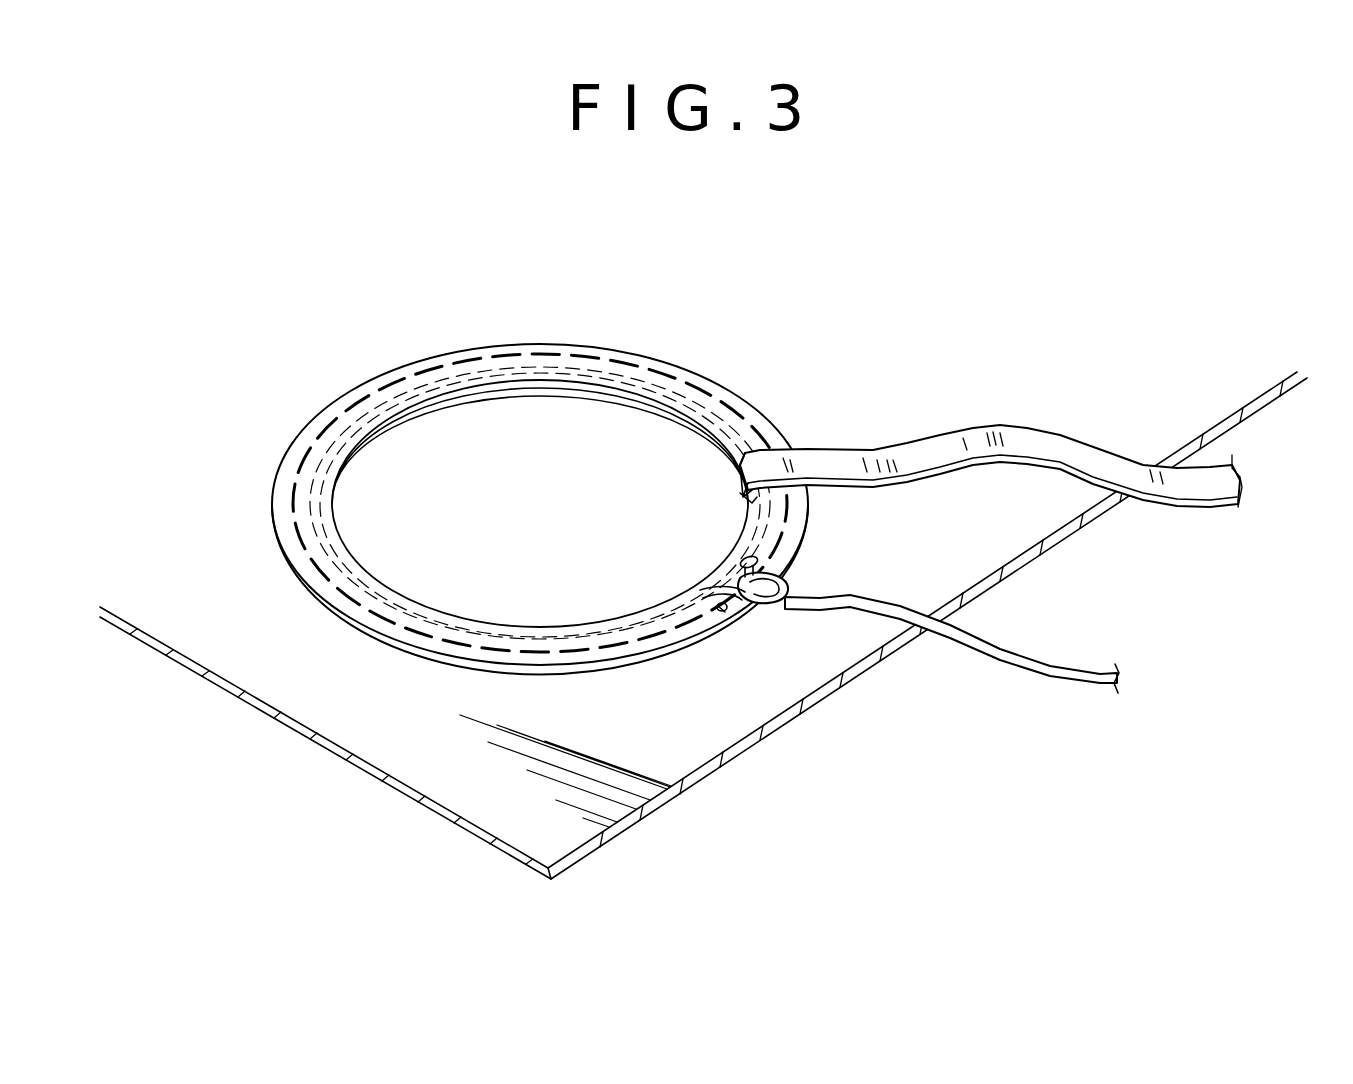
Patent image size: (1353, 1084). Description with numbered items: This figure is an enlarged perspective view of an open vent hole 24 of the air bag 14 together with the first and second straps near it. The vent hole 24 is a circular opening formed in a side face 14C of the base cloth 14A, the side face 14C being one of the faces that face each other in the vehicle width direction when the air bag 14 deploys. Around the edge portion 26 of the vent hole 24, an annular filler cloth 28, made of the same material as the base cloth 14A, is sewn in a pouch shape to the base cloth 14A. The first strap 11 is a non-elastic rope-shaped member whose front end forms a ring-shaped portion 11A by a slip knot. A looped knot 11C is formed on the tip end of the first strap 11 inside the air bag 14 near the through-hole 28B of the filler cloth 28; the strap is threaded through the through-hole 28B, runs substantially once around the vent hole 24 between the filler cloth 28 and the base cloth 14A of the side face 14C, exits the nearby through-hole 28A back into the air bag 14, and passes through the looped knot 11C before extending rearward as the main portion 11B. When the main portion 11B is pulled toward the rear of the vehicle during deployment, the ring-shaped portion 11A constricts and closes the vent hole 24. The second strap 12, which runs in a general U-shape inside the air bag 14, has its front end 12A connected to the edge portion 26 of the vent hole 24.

The first strap 11 is at (1000, 668).
The ring-shaped portion 11A is at (313, 463).
The main portion 11B is at (1063, 671).
The looped knot 11C is at (795, 563).
The second strap 12 is at (1002, 416).
The front end 12A is at (732, 494).
The air bag 14 is at (457, 841).
The base cloth 14A is at (330, 750).
The side face 14C is at (235, 625).
The vent hole 24 is at (560, 514).
The edge portion 26 is at (400, 432).
The annular filler cloth 28 is at (657, 343).
The through-hole 28A is at (732, 568).
The through-hole 28B is at (708, 592).